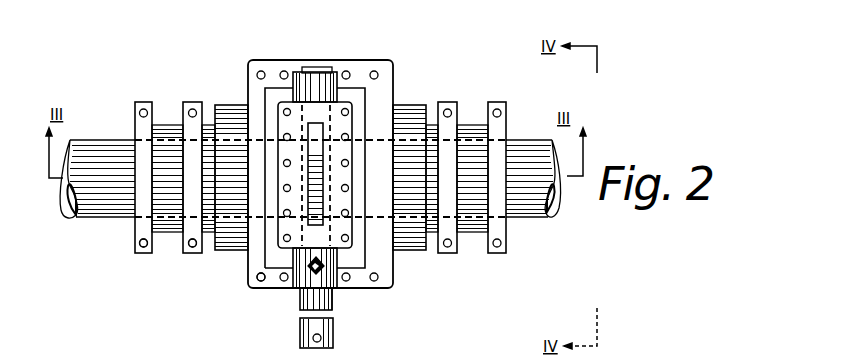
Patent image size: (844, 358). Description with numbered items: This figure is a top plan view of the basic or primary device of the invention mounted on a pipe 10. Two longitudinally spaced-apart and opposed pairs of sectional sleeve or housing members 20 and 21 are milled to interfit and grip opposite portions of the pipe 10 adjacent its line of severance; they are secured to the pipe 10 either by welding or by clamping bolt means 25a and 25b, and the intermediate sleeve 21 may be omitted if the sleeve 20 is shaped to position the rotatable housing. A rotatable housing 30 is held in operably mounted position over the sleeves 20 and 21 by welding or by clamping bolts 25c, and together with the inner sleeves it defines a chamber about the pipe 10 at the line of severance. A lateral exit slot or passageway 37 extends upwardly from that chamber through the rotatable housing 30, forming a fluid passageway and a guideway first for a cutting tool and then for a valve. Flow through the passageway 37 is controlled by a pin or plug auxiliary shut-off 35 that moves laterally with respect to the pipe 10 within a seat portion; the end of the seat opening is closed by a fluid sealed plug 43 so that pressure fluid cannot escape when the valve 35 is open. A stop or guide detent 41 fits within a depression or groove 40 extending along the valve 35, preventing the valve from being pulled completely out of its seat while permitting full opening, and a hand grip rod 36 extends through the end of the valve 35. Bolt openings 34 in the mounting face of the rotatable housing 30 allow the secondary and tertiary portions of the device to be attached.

The pipe 10 is at (103, 227).
The sleeve or housing member 20 is at (146, 254).
The intermediate sleeve 21 is at (190, 254).
The clamping bolt means 25a is at (138, 250).
The clamping bolt means 25b is at (181, 252).
The clamping bolts 25c is at (262, 282).
The rotatable housing 30 is at (218, 251).
The bolt openings 34 is at (350, 243).
The pin or plug auxiliary shut-off 35 is at (333, 304).
The hand grip rod 36 is at (333, 336).
The lateral exit slot or passageway 37 is at (318, 123).
The depression or groove 40 is at (303, 299).
The stop or guide detent 41 is at (299, 296).
The fluid sealed plug 43 is at (312, 70).